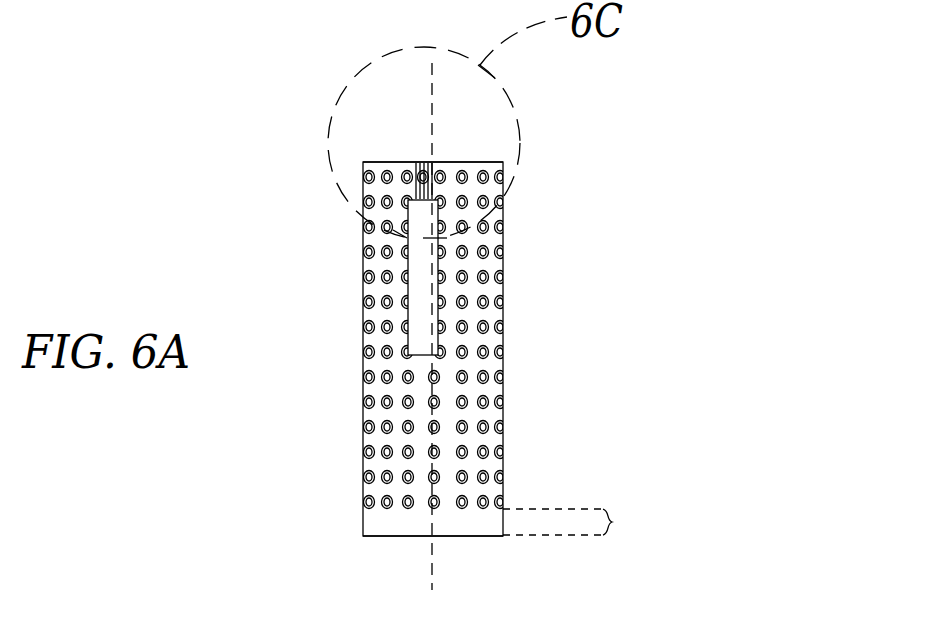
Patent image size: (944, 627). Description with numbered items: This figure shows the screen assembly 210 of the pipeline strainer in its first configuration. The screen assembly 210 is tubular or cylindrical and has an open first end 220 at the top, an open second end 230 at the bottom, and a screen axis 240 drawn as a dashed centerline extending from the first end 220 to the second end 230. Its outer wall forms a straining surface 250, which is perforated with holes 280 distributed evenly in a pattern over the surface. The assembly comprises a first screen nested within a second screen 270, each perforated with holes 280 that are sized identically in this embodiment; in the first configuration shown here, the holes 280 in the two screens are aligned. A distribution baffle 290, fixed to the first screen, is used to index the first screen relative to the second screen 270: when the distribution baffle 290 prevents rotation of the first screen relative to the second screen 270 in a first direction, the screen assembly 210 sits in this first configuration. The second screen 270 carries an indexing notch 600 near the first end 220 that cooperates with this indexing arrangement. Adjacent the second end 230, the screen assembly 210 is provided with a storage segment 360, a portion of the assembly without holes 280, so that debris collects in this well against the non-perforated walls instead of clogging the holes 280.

The screen assembly 210 is at (566, 287).
The first end 220 is at (492, 162).
The second end 230 is at (492, 537).
The screen axis 240 is at (431, 112).
The straining surface 250 is at (362, 253).
The second screen 270 is at (378, 363).
The holes 280 is at (407, 452).
The distribution baffle 290 is at (418, 348).
The storage segment 360 is at (612, 522).
The indexing notch 600 is at (427, 162).